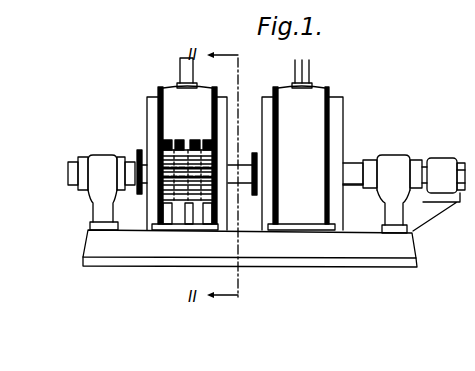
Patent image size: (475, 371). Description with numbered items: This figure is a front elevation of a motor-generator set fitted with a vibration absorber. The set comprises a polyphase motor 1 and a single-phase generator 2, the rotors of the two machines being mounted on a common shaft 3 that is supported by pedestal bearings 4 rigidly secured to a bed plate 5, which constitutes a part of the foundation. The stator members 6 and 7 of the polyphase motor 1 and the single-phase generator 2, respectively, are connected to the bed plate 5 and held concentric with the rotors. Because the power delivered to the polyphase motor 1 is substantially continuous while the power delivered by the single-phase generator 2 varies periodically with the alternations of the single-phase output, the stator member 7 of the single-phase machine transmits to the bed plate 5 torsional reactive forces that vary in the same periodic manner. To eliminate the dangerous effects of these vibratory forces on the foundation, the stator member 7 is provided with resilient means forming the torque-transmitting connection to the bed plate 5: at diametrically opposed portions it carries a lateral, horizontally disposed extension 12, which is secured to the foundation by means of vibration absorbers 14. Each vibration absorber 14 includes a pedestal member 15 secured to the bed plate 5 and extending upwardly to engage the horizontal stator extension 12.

The polyphase motor 1 is at (305, 135).
The single-phase generator 2 is at (129, 121).
The common shaft 3 is at (352, 172).
The pedestal bearings 4 is at (108, 161).
The bed plate 5 is at (98, 247).
The stator member 6 is at (293, 123).
The stator member 7 is at (177, 89).
The lateral horizontal extension 12 is at (172, 147).
The vibration absorbers 14 is at (180, 203).
The pedestal member 15 is at (199, 224).